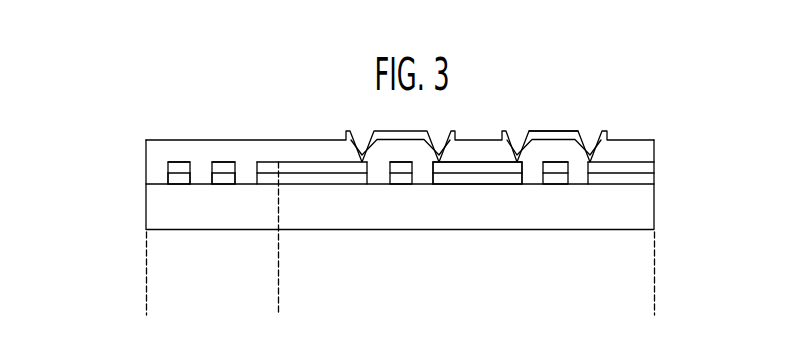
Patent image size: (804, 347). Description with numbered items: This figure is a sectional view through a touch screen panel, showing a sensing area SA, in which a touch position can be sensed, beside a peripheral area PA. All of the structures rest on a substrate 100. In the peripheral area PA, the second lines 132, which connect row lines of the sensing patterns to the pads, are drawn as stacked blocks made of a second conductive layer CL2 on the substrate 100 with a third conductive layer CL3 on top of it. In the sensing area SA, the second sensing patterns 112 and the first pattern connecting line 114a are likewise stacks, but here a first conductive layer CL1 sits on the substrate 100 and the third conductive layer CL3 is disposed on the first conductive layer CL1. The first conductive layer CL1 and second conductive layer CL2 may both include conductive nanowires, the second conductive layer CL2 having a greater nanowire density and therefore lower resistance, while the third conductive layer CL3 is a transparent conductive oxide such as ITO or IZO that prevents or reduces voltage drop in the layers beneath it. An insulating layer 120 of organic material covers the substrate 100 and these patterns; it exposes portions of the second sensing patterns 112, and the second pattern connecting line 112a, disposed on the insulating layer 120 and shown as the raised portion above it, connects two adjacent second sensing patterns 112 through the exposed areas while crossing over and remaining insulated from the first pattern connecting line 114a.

The substrate 100 is at (654, 204).
The insulating layer 120 is at (654, 149).
The second lines 132 is at (102, 150).
The third conductive layer CL3 is at (168, 165).
The second conductive layer CL2 is at (168, 178).
The first conductive layer CL1 is at (393, 182).
The first pattern connecting line 114a is at (442, 266).
The second sensing patterns 112 is at (522, 266).
The second pattern connecting line 112a is at (552, 131).
The peripheral area PA is at (146, 311).
The sensing area SA is at (278, 311).